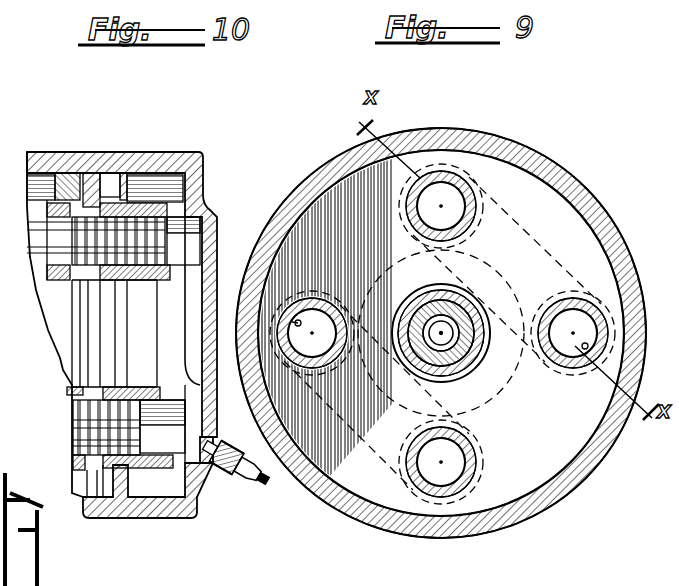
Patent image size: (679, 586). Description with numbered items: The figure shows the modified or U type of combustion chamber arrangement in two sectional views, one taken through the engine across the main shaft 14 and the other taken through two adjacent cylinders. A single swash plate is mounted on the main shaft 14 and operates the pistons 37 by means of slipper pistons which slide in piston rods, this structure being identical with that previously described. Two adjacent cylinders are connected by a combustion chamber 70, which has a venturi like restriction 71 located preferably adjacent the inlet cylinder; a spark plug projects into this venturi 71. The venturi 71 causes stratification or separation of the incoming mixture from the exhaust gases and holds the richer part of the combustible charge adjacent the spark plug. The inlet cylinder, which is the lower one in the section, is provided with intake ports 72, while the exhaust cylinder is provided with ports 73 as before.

In FIG. 9, the main shaft 14 is at (457, 333).
In FIG. 10, the pistons 37 is at (93, 241).
In FIG. 10, the combustion chamber 70 is at (218, 268).
In FIG. 10, the venturi like restriction 71 is at (196, 378).
In FIG. 10, the intake ports 72 is at (97, 462).
In FIG. 10, the ports 73 is at (93, 208).